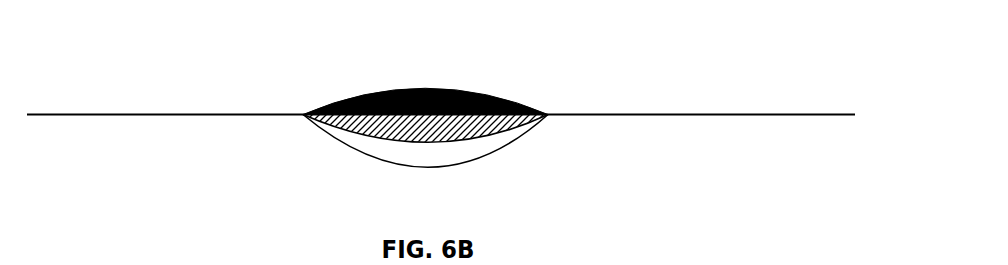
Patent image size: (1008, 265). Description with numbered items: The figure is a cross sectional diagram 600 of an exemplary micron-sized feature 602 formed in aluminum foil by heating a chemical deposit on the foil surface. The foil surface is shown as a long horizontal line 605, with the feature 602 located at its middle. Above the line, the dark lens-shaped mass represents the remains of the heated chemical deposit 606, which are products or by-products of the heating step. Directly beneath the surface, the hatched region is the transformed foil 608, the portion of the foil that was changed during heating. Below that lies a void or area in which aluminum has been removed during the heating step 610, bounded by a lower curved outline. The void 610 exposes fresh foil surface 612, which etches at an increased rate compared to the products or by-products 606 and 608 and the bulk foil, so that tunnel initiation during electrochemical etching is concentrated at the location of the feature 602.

The cross sectional diagram 600 is at (455, 131).
The feature 602 is at (428, 68).
The substrate surface line 605 is at (675, 114).
The remains of the heated chemical deposit 606 is at (515, 91).
The transformed foil 608 is at (332, 129).
The voids or areas in which aluminum has been removed 610 is at (475, 148).
The fresh foil surface 612 is at (410, 160).